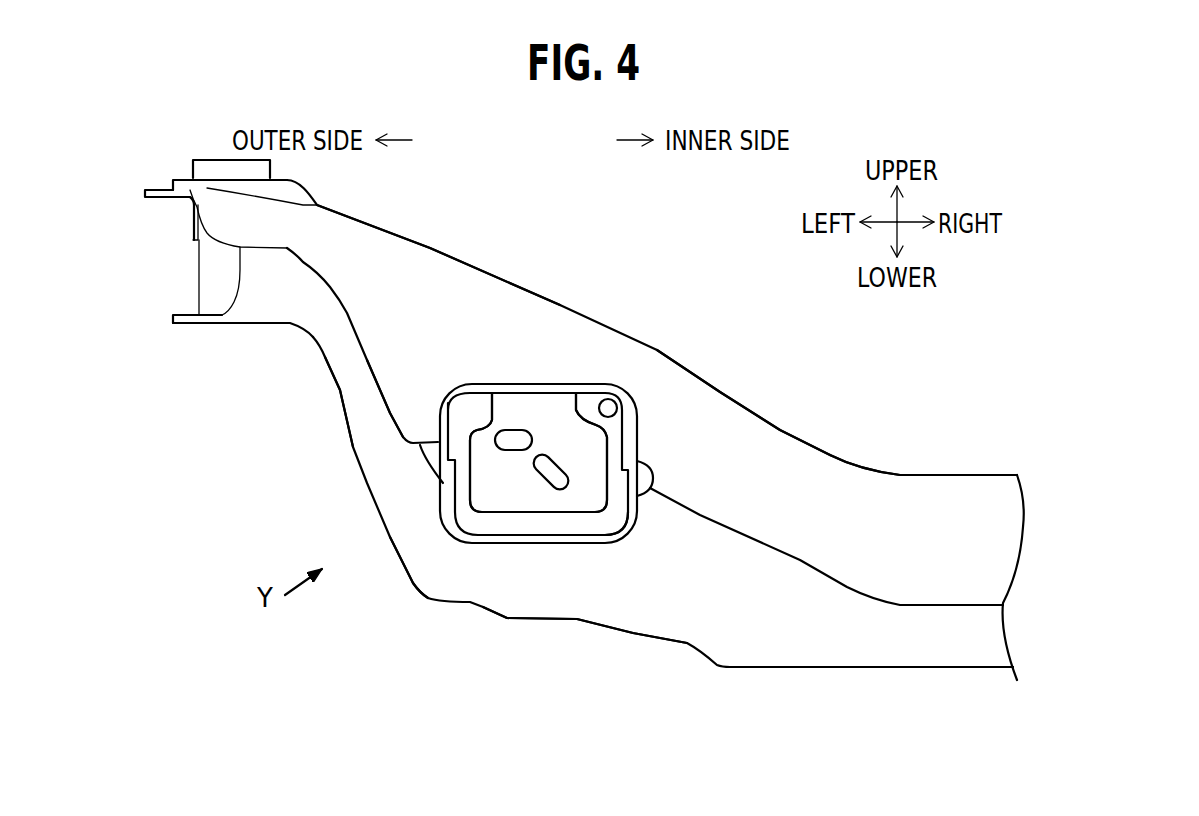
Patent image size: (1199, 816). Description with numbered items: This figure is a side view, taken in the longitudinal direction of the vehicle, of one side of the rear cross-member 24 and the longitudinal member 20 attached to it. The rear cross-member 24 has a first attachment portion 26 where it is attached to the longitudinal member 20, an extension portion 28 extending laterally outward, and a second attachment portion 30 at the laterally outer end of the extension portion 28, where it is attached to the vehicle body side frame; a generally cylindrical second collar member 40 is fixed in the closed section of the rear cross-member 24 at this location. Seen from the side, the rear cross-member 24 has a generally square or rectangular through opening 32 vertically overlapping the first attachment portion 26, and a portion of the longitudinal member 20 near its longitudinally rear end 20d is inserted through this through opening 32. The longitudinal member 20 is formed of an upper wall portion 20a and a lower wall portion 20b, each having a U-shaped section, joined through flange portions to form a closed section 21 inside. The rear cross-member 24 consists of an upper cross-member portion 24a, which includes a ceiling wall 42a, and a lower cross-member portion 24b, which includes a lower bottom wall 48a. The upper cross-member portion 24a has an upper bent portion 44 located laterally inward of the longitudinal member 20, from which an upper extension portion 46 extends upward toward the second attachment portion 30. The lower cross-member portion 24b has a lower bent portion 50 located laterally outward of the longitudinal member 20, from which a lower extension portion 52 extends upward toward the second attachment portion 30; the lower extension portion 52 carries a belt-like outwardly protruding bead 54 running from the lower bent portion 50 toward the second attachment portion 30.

The longitudinal member 20 is at (581, 467).
The upper wall portion 20a is at (580, 383).
The lower wall portion 20b is at (563, 543).
The longitudinally rear end 20d is at (507, 490).
The closed section 21 is at (543, 522).
The rear cross-member 24 is at (528, 263).
The upper cross-member portion 24a is at (805, 418).
The lower cross-member portion 24b is at (640, 640).
The first attachment portion 26 is at (630, 534).
The extension portion 28 is at (348, 446).
The second attachment portion 30 is at (186, 251).
The through opening 32 is at (616, 402).
The second collar member 40 is at (212, 288).
The ceiling wall 42a is at (978, 473).
The upper bent portion 44 is at (903, 473).
The upper extension portion 46 is at (420, 243).
The lower bottom wall 48a is at (900, 668).
The lower bent portion 50 is at (413, 582).
The lower extension portion 52 is at (336, 391).
The bead 54 is at (368, 488).